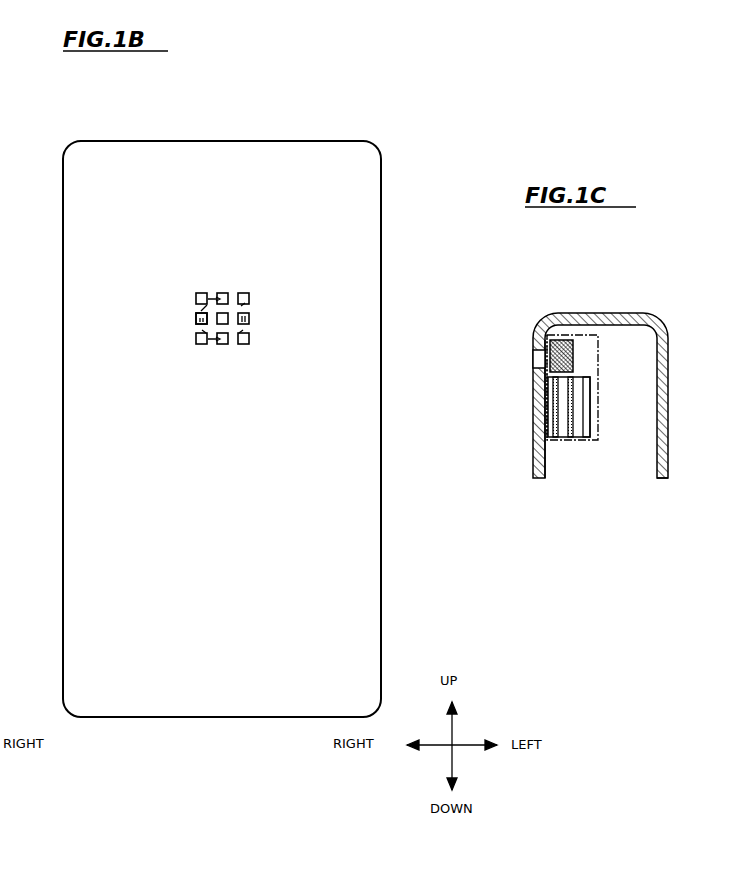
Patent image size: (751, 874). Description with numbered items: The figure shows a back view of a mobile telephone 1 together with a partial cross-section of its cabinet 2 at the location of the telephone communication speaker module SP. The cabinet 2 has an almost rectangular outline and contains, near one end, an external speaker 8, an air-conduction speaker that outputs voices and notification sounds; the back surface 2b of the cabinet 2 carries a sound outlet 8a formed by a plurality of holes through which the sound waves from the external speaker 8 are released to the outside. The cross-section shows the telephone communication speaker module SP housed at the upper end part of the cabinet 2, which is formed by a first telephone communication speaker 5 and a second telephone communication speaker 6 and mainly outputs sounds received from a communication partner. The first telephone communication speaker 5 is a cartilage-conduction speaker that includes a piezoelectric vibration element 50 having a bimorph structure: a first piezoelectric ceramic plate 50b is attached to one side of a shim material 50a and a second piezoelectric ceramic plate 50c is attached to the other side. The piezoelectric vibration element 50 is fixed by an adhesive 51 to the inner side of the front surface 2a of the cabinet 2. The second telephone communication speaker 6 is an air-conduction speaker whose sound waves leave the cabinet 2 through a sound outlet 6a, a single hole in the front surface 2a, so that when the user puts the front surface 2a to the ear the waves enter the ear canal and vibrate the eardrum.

In FIG. 1B, the mobile telephone 1 is at (381, 148).
In FIG. 1B, the cabinet 2 is at (381, 240).
In FIG. 1C, the cabinet 2 is at (668, 430).
In FIG. 1C, the front surface 2a is at (545, 415).
In FIG. 1B, the back surface 2b is at (83, 447).
In FIG. 1C, the back surface 2b is at (668, 472).
In FIG. 1C, the first telephone communication speaker 5 is at (585, 372).
In FIG. 1C, the second telephone communication speaker 6 is at (556, 338).
In FIG. 1C, the sound outlet 6a is at (533, 358).
In FIG. 1B, the external speaker 8 is at (210, 291).
In FIG. 1B, the sound outlet 8a is at (190, 325).
In FIG. 1C, the piezoelectric vibration element 50 is at (600, 400).
In FIG. 1C, the shim material 50a is at (570, 440).
In FIG. 1C, the first piezoelectric ceramic plate 50b is at (557, 440).
In FIG. 1C, the second piezoelectric ceramic plate 50c is at (587, 440).
In FIG. 1C, the adhesive 51 is at (547, 430).
In FIG. 1C, the telephone communication speaker module SP is at (583, 335).